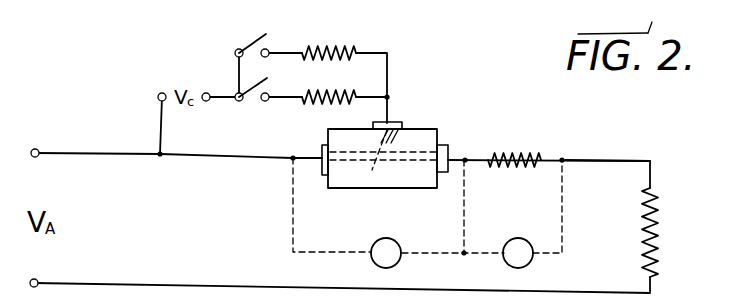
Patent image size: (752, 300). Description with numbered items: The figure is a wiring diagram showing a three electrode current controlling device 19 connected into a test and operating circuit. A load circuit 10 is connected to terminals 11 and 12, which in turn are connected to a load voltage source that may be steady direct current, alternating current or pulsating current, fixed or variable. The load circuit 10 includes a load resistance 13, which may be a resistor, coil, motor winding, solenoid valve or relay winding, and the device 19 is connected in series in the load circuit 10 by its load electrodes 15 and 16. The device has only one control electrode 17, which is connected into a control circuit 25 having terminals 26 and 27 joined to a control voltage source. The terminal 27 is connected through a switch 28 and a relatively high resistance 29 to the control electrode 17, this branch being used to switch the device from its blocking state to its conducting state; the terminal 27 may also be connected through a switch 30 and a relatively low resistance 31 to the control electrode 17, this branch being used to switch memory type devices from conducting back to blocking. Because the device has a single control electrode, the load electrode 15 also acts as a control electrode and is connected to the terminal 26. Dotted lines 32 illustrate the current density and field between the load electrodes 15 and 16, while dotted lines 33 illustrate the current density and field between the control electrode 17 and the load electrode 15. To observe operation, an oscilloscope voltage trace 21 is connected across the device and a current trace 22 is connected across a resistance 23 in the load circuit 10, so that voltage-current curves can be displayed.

The load circuit 10 is at (611, 160).
The terminal 11 is at (37, 149).
The terminal 12 is at (34, 279).
The load resistance 13 is at (657, 235).
The load electrode 15 is at (323, 178).
The load electrode 16 is at (449, 150).
The control electrode 17 is at (403, 124).
The three electrode type device 19 is at (424, 137).
The voltage trace 21 is at (391, 239).
The current trace 22 is at (528, 227).
The resistance 23 is at (518, 158).
The control circuit 25 is at (390, 108).
The terminal 26 is at (158, 96).
The terminal 27 is at (207, 93).
The switch 28 is at (253, 98).
The relatively high resistance 29 is at (316, 90).
The switch 30 is at (251, 42).
The relatively low resistance 31 is at (329, 46).
The dotted lines 32 is at (372, 170).
The dotted lines 33 is at (372, 152).